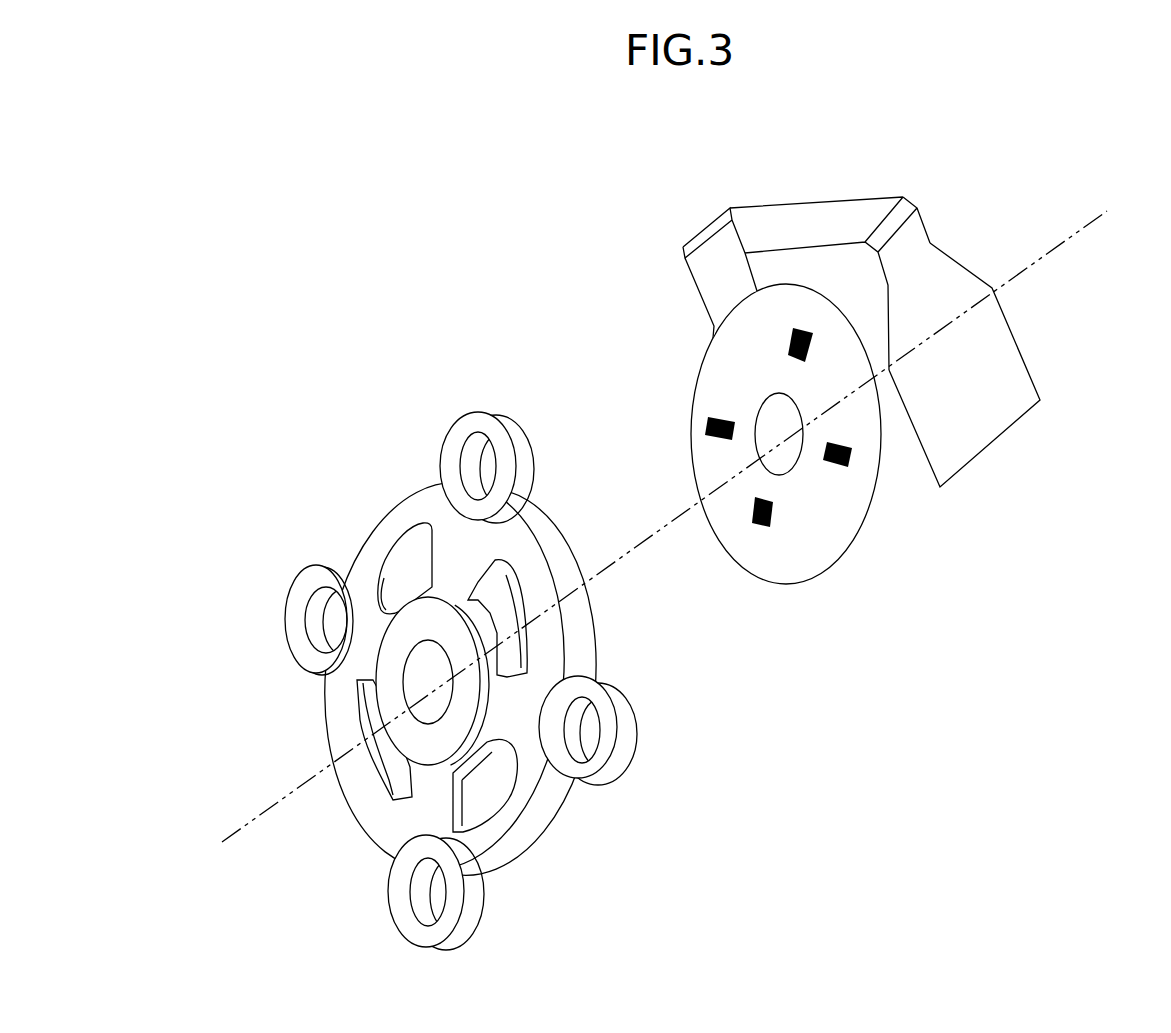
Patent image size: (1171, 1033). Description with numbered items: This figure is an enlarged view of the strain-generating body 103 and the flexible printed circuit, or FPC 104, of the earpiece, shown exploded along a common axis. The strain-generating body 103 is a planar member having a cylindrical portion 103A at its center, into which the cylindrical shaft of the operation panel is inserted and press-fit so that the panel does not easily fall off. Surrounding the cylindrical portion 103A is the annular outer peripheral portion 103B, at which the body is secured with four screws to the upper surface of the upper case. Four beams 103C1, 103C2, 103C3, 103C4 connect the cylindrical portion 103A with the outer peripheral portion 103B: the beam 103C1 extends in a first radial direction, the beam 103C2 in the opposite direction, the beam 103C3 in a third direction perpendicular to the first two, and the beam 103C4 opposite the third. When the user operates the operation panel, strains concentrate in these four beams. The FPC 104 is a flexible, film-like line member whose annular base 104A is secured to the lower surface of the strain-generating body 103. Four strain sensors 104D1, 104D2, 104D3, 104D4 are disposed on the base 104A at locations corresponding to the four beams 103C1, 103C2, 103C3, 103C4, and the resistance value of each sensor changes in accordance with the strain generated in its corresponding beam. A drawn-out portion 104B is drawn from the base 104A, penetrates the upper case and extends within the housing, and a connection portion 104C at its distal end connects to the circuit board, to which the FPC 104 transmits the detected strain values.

The strain-generating body 103 is at (489, 628).
The cylindrical portion 103A is at (410, 733).
The outer peripheral portion 103B is at (550, 807).
The beam 103C1 is at (432, 790).
The beam 103C2 is at (457, 573).
The beam 103C3 is at (493, 710).
The beam 103C4 is at (368, 650).
The flexible printed circuit (FPC) 104 is at (829, 395).
The base 104A is at (842, 565).
The drawn-out portion 104B is at (786, 227).
The connection portion 104C is at (1010, 418).
The strain sensor 104D1 is at (760, 520).
The strain sensor 104D2 is at (798, 347).
The strain sensor 104D3 is at (848, 460).
The strain sensor 104D4 is at (713, 428).